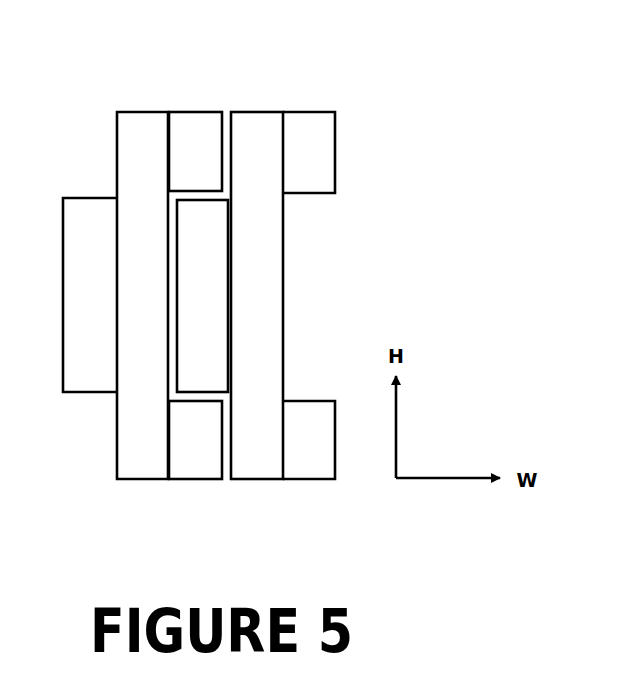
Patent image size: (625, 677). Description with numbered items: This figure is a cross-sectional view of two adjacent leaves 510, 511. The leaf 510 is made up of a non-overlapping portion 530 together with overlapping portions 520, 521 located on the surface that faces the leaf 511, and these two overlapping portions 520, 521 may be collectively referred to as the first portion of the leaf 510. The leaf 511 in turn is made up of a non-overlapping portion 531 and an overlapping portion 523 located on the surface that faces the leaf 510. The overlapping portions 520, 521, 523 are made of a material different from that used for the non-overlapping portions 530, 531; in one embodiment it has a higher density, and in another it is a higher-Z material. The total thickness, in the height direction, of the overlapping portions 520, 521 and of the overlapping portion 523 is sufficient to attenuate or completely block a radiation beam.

The leaf 510 is at (137, 277).
The leaf 511 is at (291, 277).
The overlapping portion 520 is at (176, 162).
The overlapping portion 521 is at (176, 451).
The overlapping portion 523 is at (184, 307).
The non-overlapping portion 530 is at (123, 307).
The non-overlapping portion 531 is at (238, 307).